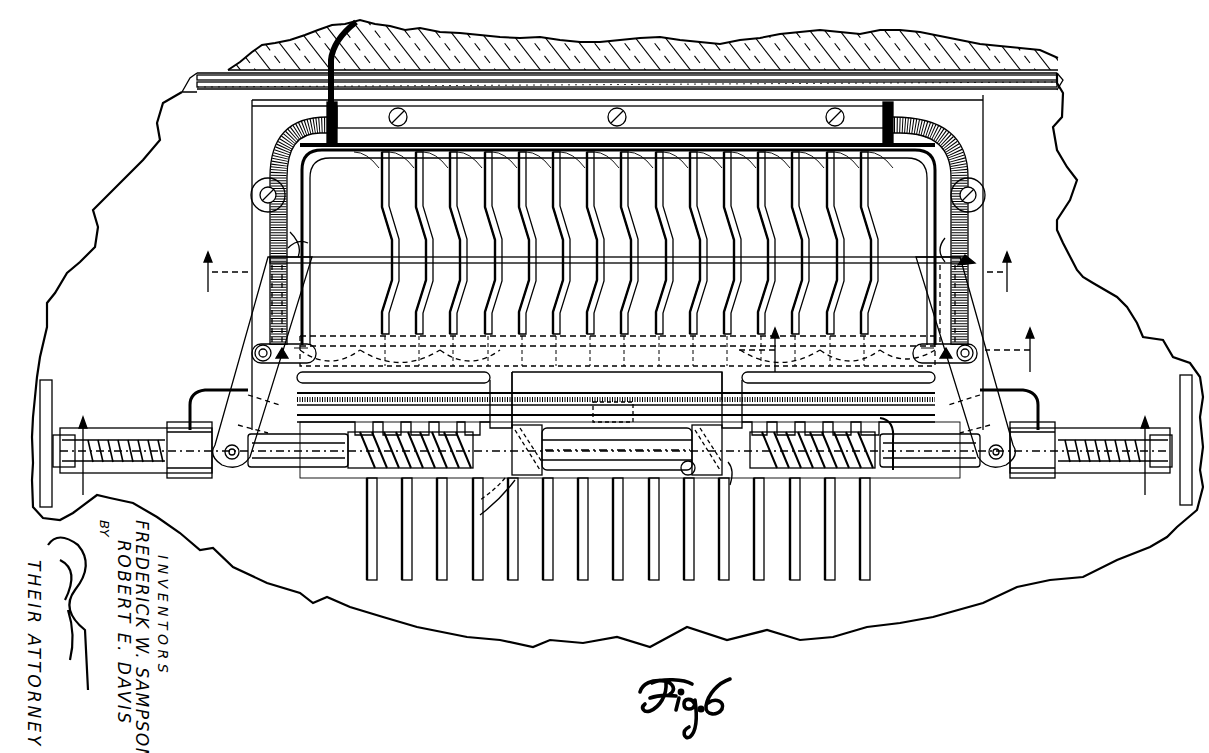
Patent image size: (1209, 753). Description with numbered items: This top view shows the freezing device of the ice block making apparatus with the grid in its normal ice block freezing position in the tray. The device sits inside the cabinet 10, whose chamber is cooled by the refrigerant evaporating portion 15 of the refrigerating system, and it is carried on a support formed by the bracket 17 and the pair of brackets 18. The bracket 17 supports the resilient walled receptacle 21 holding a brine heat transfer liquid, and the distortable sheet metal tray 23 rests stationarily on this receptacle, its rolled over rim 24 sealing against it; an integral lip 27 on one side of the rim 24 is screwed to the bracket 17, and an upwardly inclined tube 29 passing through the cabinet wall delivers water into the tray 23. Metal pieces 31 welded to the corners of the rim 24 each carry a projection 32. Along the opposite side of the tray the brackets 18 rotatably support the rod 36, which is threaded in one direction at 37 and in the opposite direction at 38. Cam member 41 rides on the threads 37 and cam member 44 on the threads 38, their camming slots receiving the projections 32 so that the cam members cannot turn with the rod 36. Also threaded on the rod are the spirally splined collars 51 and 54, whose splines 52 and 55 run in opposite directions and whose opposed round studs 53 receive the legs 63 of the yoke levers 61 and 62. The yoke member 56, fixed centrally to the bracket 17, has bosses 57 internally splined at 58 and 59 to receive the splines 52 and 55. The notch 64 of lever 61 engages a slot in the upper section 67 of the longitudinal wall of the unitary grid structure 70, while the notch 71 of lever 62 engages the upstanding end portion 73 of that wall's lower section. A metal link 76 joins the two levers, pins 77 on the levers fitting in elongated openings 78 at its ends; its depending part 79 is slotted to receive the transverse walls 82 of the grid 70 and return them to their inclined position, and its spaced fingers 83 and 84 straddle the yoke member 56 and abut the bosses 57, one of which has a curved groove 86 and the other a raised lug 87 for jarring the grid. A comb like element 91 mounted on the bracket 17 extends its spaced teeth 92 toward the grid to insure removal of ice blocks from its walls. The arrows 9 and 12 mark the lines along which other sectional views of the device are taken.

The cabinet 10 is at (1012, 55).
The refrigerant evaporating portion 15 is at (233, 72).
The bracket 17 is at (255, 106).
The brackets 18 is at (48, 390).
The resilient walled receptacle 21 is at (270, 150).
The tray 23 is at (905, 185).
The rolled over rim 24 is at (950, 158).
The integral lip 27 is at (900, 112).
The upwardly inclined tube 29 is at (352, 22).
The metal pieces 31 is at (925, 377).
The projection 32 is at (203, 392).
The rod 36 is at (636, 470).
The threads 37 is at (155, 462).
The threads 38 is at (1100, 470).
The cam member 41 is at (198, 480).
The cam member 44 is at (1035, 480).
The cam shank or collar 51 is at (312, 455).
The spline 52 is at (360, 470).
The studs 53 is at (234, 462).
The cam shank or collar 54 is at (925, 455).
The spline 55 is at (848, 470).
The yoke member 56 is at (600, 470).
The bosses 57 is at (530, 478).
The internal spline 58 is at (500, 478).
The internal spline 59 is at (687, 470).
The yoke lever 61 is at (256, 320).
The yoke lever 62 is at (970, 318).
The legs 63 is at (248, 450).
The notch 64 is at (298, 248).
The upper section 67 is at (370, 264).
The unitary grid structure 70 is at (476, 165).
The notch 71 is at (945, 250).
The upstanding end portion 73 is at (975, 258).
The metal link 76 is at (604, 345).
The pin or stud 77 is at (255, 352).
The elongated openings 78 is at (290, 352).
The depending part 79 is at (641, 345).
The transverse walls 82 is at (690, 170).
The finger 83 is at (500, 384).
The finger 84 is at (735, 384).
The curved walled groove 86 is at (515, 480).
The raised curved lug 87 is at (732, 485).
The comb like element 91 is at (890, 458).
The teeth 92 is at (405, 553).
The section line 9 is at (614, 447).
The movable insulated top 12 is at (607, 270).